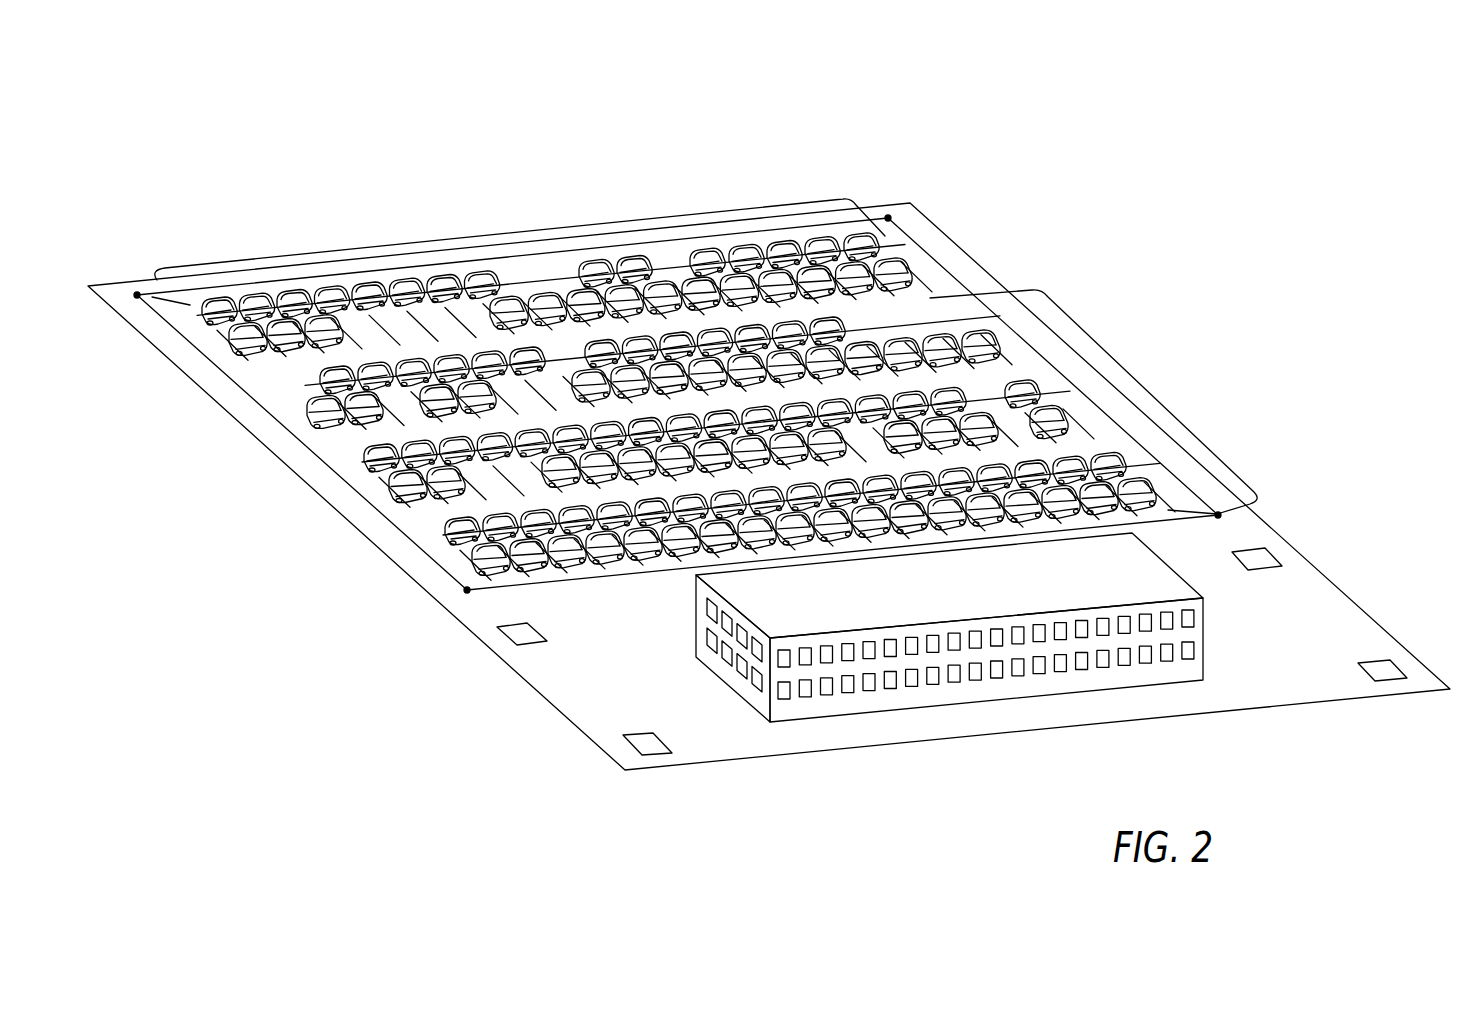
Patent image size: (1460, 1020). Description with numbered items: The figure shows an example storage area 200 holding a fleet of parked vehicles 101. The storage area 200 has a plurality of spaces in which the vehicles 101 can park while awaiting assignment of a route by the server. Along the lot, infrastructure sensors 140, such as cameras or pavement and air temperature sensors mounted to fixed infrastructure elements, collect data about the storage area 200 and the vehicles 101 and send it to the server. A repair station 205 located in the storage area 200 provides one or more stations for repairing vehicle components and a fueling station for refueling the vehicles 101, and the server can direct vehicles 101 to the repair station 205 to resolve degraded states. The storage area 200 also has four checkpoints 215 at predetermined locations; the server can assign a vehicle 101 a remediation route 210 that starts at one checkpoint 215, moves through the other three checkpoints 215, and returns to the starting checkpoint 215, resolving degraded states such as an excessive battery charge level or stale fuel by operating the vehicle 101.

The storage area 200 is at (281, 119).
The vehicle 101 is at (1140, 373).
The remediation route 210 is at (340, 272).
The checkpoint 215 is at (137, 294).
The infrastructure sensor 140 is at (1264, 549).
The repair station 205 is at (1207, 618).